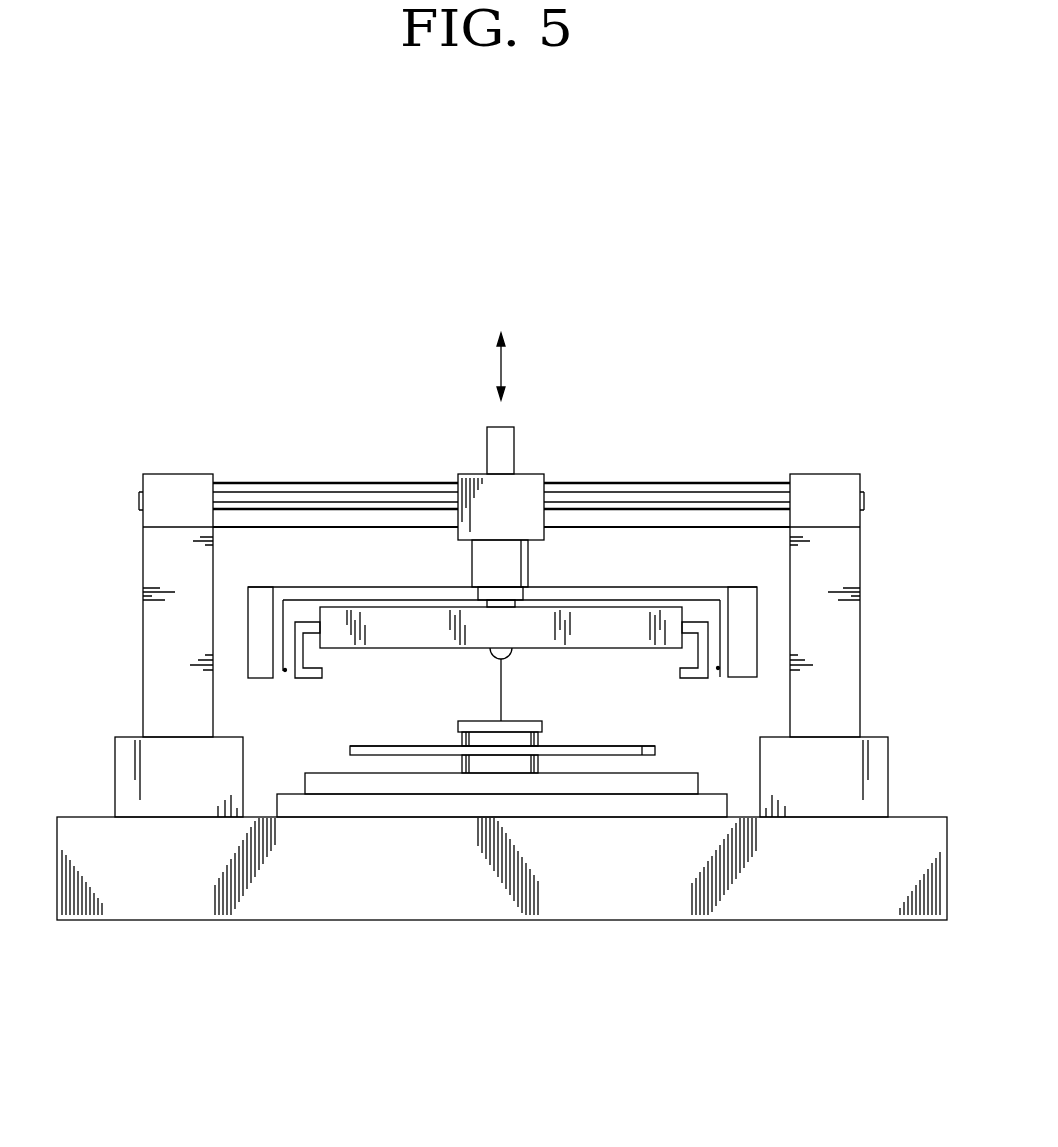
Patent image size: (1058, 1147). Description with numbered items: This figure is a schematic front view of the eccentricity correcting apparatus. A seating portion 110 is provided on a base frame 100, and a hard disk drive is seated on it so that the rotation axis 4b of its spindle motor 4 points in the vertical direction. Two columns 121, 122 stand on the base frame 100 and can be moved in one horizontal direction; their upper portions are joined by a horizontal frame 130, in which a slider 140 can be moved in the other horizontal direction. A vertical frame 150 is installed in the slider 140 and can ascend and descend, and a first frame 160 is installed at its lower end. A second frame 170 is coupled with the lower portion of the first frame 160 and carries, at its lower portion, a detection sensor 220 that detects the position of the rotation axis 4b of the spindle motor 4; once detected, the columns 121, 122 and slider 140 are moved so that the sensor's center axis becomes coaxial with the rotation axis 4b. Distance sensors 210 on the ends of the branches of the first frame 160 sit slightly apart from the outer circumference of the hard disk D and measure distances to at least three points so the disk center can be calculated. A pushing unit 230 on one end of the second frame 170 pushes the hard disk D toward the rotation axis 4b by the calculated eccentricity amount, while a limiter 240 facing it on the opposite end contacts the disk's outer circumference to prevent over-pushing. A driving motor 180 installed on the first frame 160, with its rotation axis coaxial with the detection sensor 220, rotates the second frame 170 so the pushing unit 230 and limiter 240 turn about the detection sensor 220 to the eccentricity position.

The spindle motor 4 is at (552, 765).
The rotation axis 4b is at (500, 690).
The hard disk D is at (608, 745).
The base frame 100 is at (330, 782).
The seating portion 110 is at (292, 800).
The column 121 is at (860, 633).
The column 122 is at (143, 632).
The horizontal frame 130 is at (334, 483).
The slider 140 is at (471, 479).
The vertical frame 150 is at (516, 451).
The first frame 160 is at (671, 580).
The second frame 170 is at (556, 655).
The driving motor 180 is at (528, 567).
The distance sensor 210 is at (286, 668).
The detection sensor 220 is at (492, 655).
The pushing unit 230 is at (320, 656).
The limiter 240 is at (685, 654).